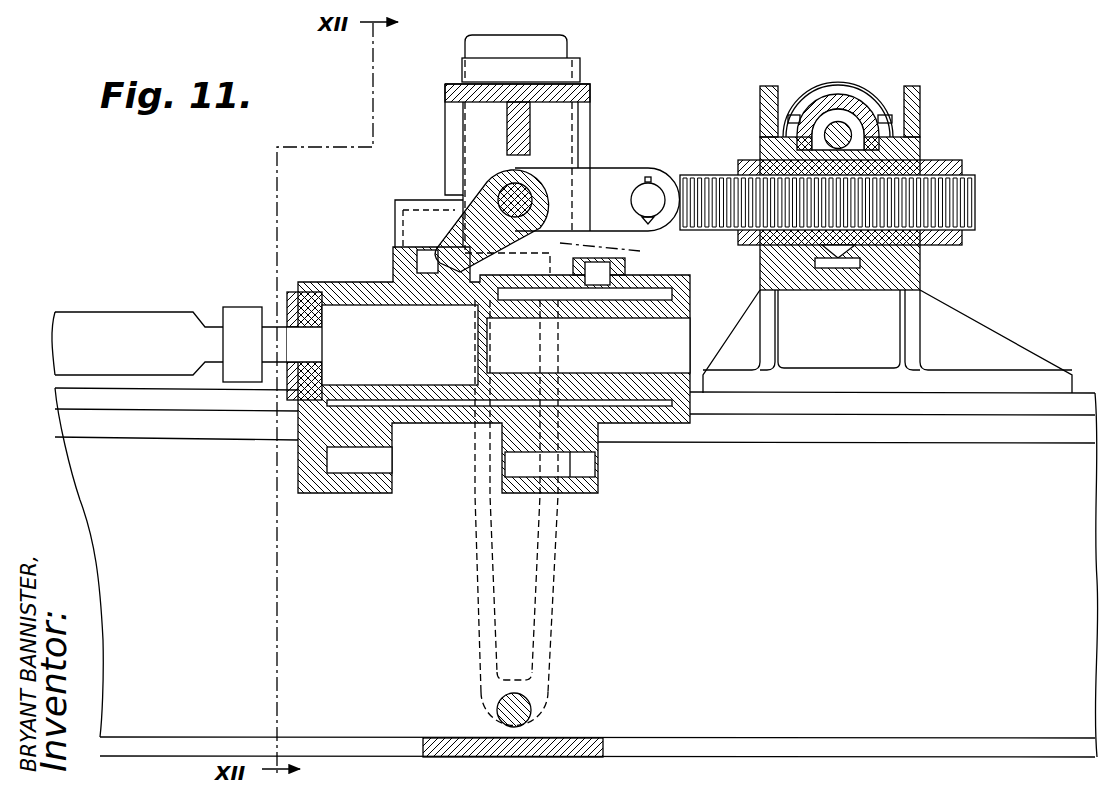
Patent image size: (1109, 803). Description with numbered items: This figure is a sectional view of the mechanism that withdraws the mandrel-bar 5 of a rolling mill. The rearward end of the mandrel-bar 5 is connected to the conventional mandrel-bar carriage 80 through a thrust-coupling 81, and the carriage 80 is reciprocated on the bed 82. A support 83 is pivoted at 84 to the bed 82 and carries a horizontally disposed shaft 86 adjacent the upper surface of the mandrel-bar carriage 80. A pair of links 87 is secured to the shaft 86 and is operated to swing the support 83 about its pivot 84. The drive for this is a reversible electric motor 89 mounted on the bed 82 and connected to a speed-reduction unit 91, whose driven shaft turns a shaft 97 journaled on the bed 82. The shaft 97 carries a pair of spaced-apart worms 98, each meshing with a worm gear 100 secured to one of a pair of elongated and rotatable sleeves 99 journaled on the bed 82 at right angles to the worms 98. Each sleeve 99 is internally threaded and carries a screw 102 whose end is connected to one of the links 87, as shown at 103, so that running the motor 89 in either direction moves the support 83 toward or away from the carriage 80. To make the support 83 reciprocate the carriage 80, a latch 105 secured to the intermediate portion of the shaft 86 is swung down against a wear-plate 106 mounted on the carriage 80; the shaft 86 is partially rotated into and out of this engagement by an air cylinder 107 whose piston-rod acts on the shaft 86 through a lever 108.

The mandrel-bar 5 is at (120, 318).
The thrust-coupling 81 is at (240, 312).
The mandrel-bar carriage 80 is at (488, 288).
The bed 82 is at (200, 565).
The support 83 is at (587, 82).
The pivot 84 is at (530, 712).
The horizontally disposed shaft 86 is at (503, 170).
The links 87 is at (600, 177).
The connection of screw to link 103 is at (650, 193).
The latch 105 is at (477, 193).
The wear-plate 106 is at (430, 273).
The air cylinder 107 is at (407, 222).
The lever 108 is at (623, 253).
The worms 98 is at (833, 127).
The reversible electric motor 89 is at (836, 81).
The speed-reduction unit 91 is at (852, 92).
The shaft 97 is at (850, 128).
The elongated and rotatable sleeves 99 is at (947, 168).
The screw 102 is at (975, 195).
The worm gear 100 is at (840, 262).